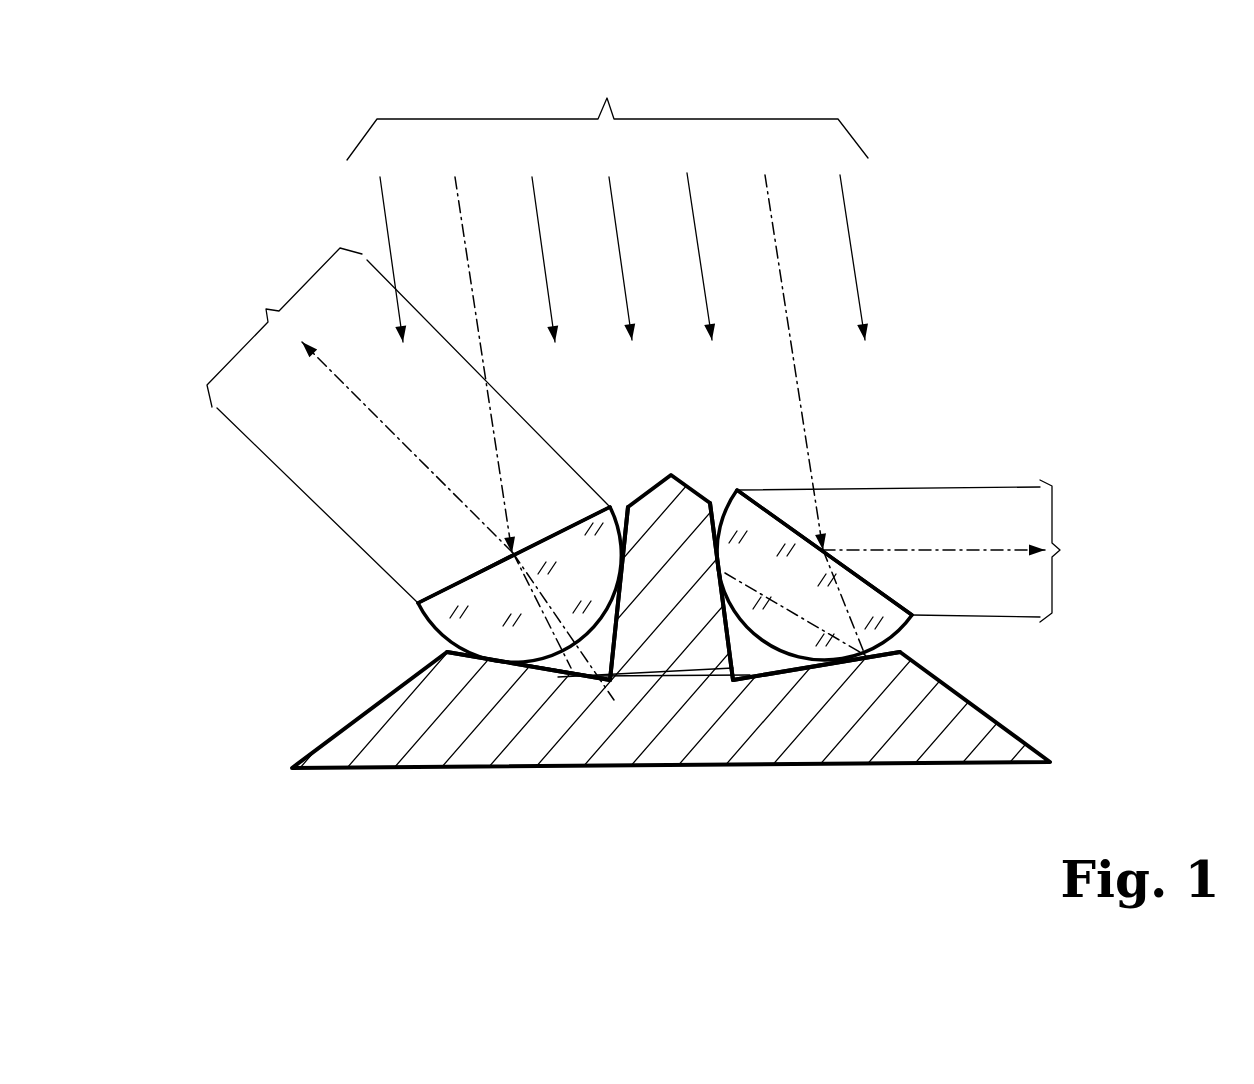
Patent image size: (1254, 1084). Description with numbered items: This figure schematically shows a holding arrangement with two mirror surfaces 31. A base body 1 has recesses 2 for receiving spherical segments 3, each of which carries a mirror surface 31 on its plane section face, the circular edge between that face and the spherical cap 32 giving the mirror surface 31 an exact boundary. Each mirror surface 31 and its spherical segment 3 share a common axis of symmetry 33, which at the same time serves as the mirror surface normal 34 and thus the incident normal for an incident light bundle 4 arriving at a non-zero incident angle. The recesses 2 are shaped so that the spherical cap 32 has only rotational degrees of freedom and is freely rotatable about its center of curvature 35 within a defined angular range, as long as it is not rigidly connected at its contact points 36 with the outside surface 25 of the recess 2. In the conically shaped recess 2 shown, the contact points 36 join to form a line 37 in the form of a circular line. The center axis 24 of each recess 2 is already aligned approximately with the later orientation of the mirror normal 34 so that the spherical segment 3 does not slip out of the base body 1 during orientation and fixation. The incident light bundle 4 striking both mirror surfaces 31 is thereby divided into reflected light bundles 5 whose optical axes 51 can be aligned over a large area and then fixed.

The base body 1 is at (878, 727).
The recess 2 is at (443, 656).
The spherical segment 3 is at (448, 630).
The incident light bundle 4 is at (607, 372).
The light bundle 5 is at (659, 435).
The center axis 24 is at (590, 676).
The outside surface 25 is at (733, 668).
The mirror surface 31 is at (444, 593).
The spherical cap 32 is at (607, 678).
The axis of symmetry 33 is at (537, 598).
The mirror surface normal 34 is at (904, 456).
The center of curvature 35 is at (513, 552).
The contact point 36 is at (713, 580).
The line 37 is at (797, 627).
The optical axis 51 is at (365, 407).